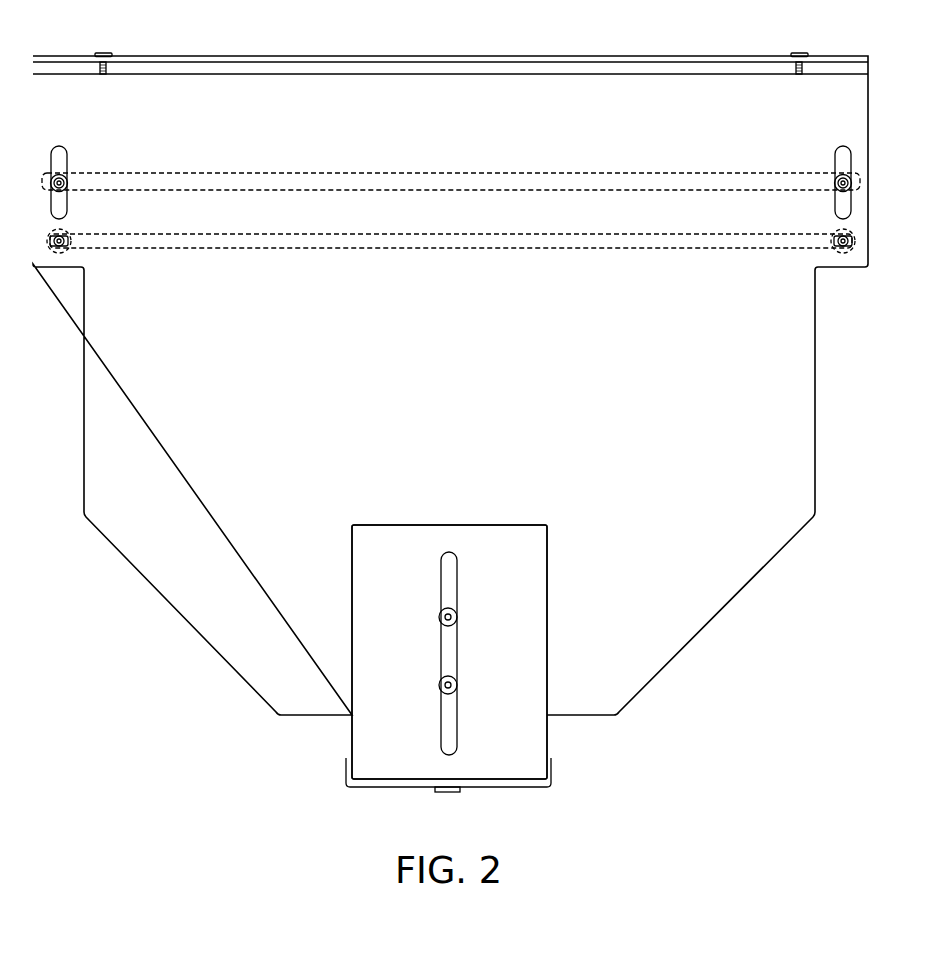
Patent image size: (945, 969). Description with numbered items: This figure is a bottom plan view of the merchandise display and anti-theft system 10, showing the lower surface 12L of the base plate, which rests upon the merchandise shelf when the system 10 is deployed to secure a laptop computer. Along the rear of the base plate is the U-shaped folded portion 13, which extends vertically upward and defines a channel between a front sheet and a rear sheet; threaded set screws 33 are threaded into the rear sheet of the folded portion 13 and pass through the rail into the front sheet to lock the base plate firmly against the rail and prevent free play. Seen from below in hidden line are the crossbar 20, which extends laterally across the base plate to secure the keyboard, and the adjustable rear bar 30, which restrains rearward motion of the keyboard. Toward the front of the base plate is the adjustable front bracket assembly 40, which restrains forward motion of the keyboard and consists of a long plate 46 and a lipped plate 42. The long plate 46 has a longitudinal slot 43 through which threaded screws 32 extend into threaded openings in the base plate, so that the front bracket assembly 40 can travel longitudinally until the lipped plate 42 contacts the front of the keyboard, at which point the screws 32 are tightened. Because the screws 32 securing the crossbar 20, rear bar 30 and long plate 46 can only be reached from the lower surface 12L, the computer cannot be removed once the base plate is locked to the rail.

The merchandise display and anti-theft system 10 is at (83, 680).
The lower surface 12L is at (472, 380).
The U-shaped folded portion 13 is at (866, 57).
The crossbar 20 is at (818, 250).
The adjustable rear bar 30 is at (812, 175).
The threaded screws 32 is at (458, 615).
The threaded set screws 33 is at (800, 53).
The front bracket assembly 40 is at (307, 752).
The lipped plate 42 is at (522, 788).
The longitudinal slot 43 is at (442, 570).
The long plate 46 is at (533, 735).